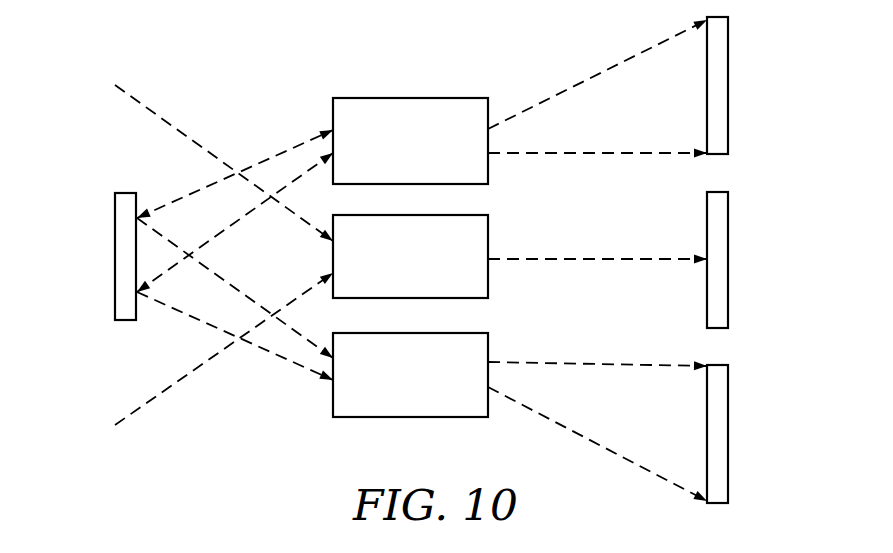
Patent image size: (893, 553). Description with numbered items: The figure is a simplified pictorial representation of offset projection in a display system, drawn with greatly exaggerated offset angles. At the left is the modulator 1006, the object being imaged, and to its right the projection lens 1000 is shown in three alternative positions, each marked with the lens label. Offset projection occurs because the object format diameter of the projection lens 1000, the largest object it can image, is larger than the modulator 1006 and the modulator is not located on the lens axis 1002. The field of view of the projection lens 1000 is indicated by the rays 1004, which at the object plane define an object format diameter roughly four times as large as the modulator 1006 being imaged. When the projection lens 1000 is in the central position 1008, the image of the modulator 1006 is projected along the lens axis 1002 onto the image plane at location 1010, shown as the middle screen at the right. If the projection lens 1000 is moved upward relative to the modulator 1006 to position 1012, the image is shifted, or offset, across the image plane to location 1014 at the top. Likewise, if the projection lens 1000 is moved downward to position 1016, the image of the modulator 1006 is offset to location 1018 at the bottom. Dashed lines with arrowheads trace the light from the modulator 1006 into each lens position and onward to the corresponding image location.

The projection lens 1000 is at (386, 154).
The lens axis 1002 is at (590, 260).
The rays 1004 is at (152, 113).
The modulator 1006 is at (115, 258).
The position 1008 is at (488, 232).
The location 1010 is at (728, 258).
The position 1012 is at (412, 98).
The location 1014 is at (728, 85).
The position 1016 is at (410, 418).
The location 1018 is at (728, 432).